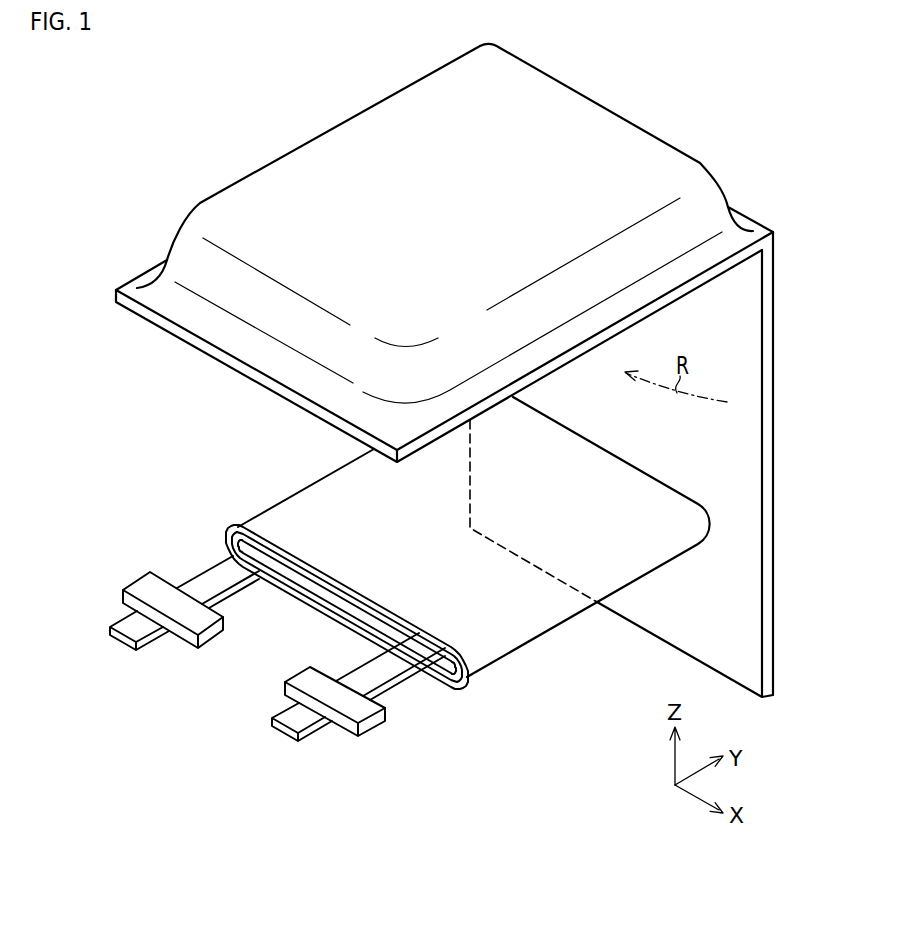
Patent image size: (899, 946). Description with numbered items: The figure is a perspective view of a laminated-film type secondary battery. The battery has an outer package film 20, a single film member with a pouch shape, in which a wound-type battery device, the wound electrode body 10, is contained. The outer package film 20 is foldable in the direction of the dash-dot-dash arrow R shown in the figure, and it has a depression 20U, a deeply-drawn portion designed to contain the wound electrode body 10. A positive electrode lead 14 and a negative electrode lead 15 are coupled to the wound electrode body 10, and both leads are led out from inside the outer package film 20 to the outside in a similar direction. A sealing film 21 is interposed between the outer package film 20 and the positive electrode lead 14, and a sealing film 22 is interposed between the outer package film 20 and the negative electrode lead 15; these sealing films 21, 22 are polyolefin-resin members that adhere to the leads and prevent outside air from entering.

The wound electrode body 10 is at (531, 670).
The positive electrode lead 14 is at (132, 630).
The negative electrode lead 15 is at (296, 722).
The outer package film 20 is at (590, 123).
The depression 20U is at (340, 158).
The sealing film 21 is at (140, 588).
The sealing film 22 is at (366, 712).